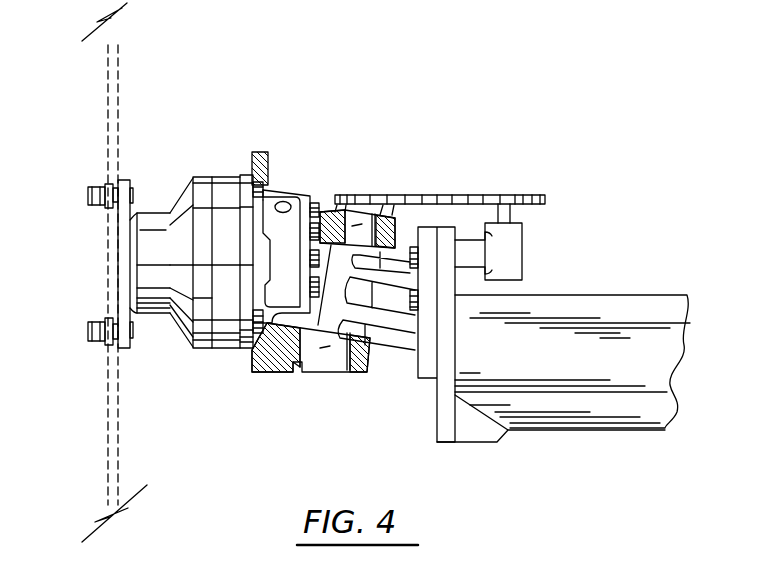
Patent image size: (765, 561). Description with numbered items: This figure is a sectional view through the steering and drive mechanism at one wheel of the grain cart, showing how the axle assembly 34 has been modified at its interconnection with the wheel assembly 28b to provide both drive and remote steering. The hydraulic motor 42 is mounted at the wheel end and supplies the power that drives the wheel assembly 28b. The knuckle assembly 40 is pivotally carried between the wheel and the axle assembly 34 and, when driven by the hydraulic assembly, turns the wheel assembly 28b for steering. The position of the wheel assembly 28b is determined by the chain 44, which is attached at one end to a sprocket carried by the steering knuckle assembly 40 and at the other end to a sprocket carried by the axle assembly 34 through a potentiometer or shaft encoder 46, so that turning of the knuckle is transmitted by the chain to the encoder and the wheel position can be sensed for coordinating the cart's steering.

The wheel assembly 28b is at (108, 276).
The hydraulic motor 42 is at (203, 175).
The knuckle assembly 40 is at (302, 360).
The chain 44 is at (435, 195).
The potentiometer or shaft encoder 46 is at (522, 247).
The axle assembly 34 is at (588, 413).